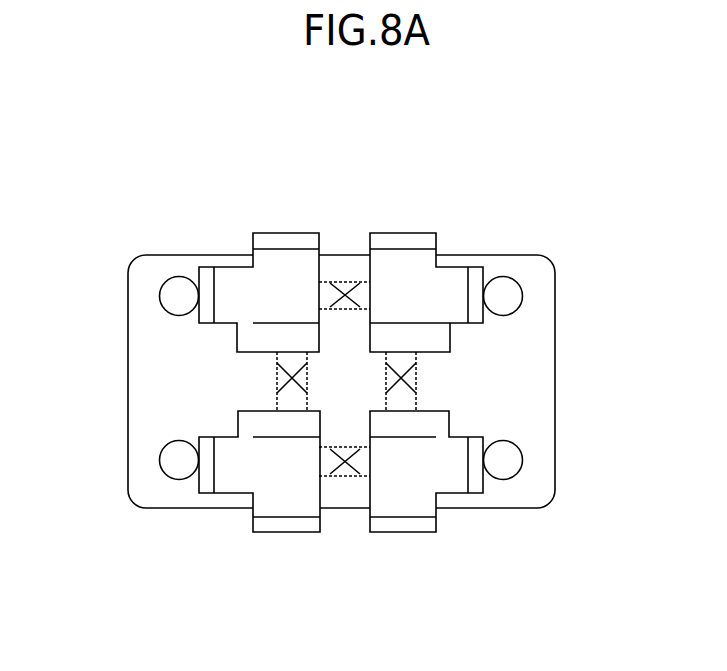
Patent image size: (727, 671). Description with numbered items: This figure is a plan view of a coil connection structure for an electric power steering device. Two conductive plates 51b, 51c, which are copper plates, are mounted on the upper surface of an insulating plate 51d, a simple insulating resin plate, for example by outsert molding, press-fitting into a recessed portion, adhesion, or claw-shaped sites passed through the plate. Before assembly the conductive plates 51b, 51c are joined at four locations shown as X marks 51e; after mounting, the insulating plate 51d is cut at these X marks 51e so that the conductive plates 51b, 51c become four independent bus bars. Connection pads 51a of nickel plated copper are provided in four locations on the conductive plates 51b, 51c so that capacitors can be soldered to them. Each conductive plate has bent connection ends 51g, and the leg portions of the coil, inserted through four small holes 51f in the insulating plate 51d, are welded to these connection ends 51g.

The connection pad 51a is at (313, 330).
The conductive plate 51b is at (234, 267).
The conductive plate 51c is at (443, 497).
The insulating plate 51d is at (555, 377).
The X mark 51e is at (345, 470).
The small hole 51f is at (163, 475).
The connection end 51g is at (253, 532).